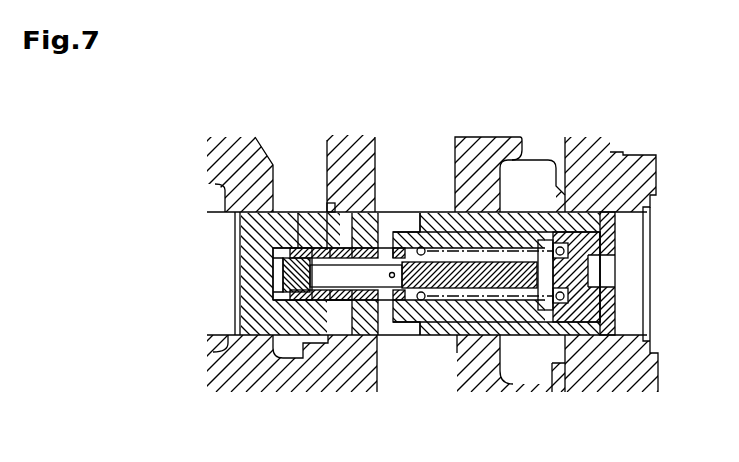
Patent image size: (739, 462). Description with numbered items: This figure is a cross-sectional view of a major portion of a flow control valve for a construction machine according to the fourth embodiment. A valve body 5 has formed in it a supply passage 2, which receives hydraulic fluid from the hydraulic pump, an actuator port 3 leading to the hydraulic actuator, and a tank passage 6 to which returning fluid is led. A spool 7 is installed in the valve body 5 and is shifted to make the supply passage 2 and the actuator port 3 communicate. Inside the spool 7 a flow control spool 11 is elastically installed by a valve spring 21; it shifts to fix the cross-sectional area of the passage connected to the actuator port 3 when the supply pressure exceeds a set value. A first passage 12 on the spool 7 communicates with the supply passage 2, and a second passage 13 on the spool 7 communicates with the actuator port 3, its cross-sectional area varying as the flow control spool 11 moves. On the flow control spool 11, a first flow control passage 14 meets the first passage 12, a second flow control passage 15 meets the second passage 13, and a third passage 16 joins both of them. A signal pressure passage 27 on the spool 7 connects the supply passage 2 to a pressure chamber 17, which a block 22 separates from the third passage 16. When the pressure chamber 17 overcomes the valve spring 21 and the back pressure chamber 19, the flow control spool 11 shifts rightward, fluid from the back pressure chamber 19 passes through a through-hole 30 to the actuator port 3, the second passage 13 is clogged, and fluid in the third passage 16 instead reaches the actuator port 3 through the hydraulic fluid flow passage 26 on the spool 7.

The supply passage 2 is at (271, 144).
The signal pressure passage 27 is at (302, 225).
The first passage 12 is at (340, 210).
The second passage 13 is at (382, 218).
The first flow control passage 14 is at (340, 250).
The second flow control passage 15 is at (421, 246).
The third passage 16 is at (390, 279).
The through-hole 30 is at (468, 262).
The actuator port 3 is at (443, 152).
The tank passage 6 is at (538, 170).
The valve body 5 is at (613, 152).
The spool 7 is at (648, 189).
The valve spring 21 is at (545, 247).
The back pressure chamber 19 is at (550, 310).
The block 22 is at (285, 278).
The pressure chamber 17 is at (272, 270).
The flow control spool 11 is at (340, 310).
The hydraulic fluid flow passage 26 is at (438, 305).